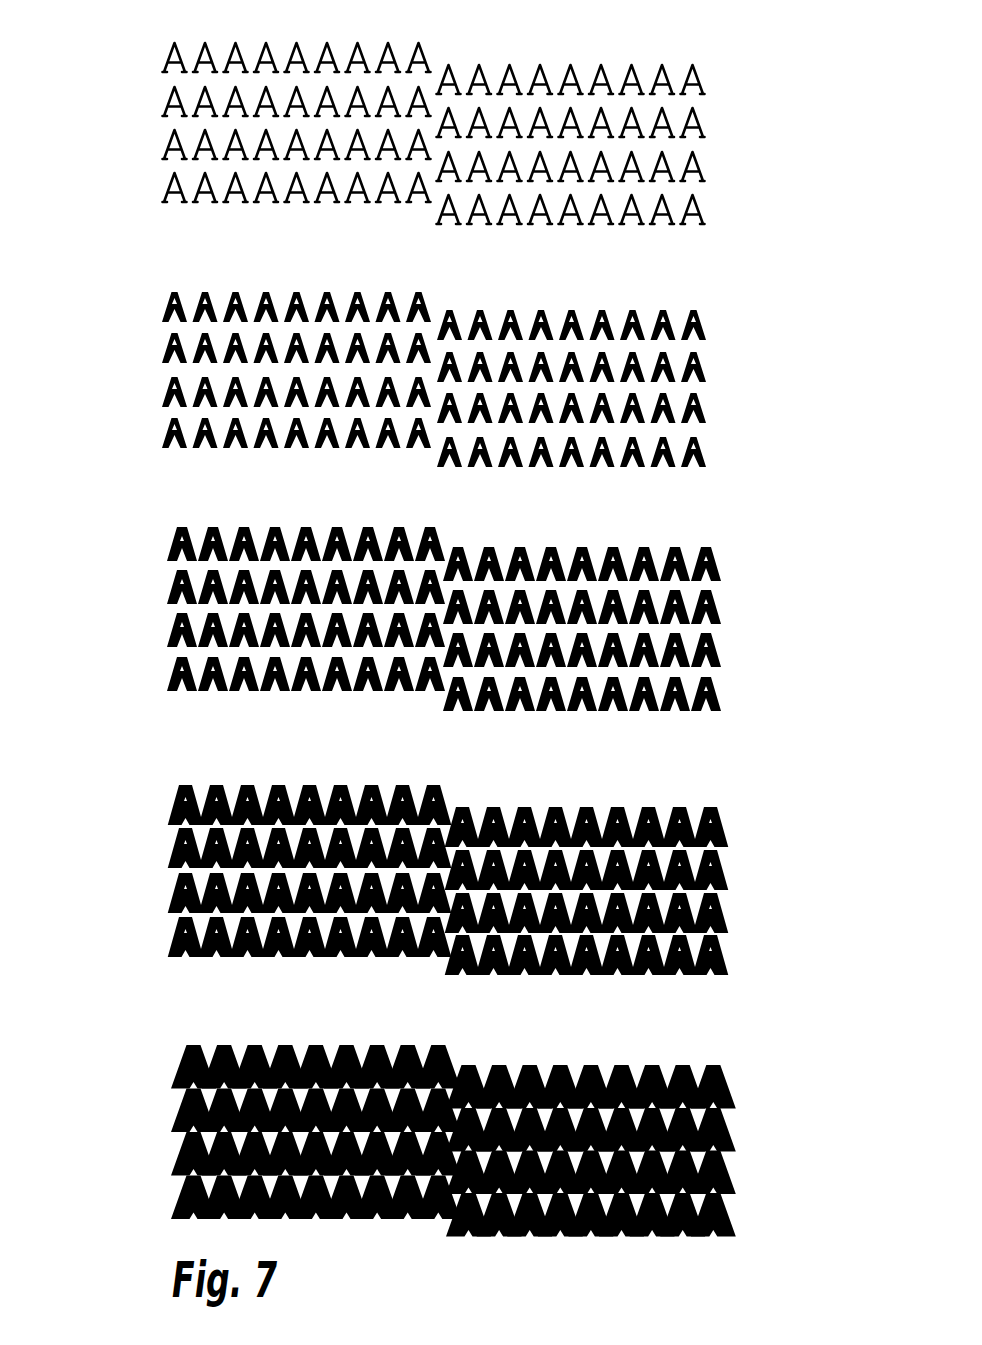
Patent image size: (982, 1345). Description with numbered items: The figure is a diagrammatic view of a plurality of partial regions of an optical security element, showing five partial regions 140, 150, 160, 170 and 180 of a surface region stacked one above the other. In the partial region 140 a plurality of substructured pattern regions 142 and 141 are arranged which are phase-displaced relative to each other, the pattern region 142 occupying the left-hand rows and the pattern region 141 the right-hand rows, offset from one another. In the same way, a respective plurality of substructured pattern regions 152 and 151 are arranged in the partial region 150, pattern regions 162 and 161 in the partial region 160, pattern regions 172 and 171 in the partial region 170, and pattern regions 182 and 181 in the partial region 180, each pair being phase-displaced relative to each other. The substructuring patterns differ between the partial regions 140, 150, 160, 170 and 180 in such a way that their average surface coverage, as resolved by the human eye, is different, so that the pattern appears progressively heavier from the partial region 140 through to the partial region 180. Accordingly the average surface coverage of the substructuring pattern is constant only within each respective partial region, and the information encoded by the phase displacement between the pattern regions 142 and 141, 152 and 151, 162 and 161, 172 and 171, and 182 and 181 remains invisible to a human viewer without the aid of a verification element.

The partial region 140 is at (443, 50).
The substructured pattern region 141 is at (720, 75).
The substructured pattern region 142 is at (147, 193).
The partial region 150 is at (445, 300).
The substructured pattern region 151 is at (723, 327).
The substructured pattern region 152 is at (153, 442).
The partial region 160 is at (462, 533).
The substructured pattern region 161 is at (738, 562).
The substructured pattern region 162 is at (158, 672).
The partial region 170 is at (455, 793).
The substructured pattern region 171 is at (747, 823).
The substructured pattern region 172 is at (163, 940).
The partial region 180 is at (468, 1053).
The substructured pattern region 181 is at (745, 1083).
The substructured pattern region 182 is at (163, 1202).